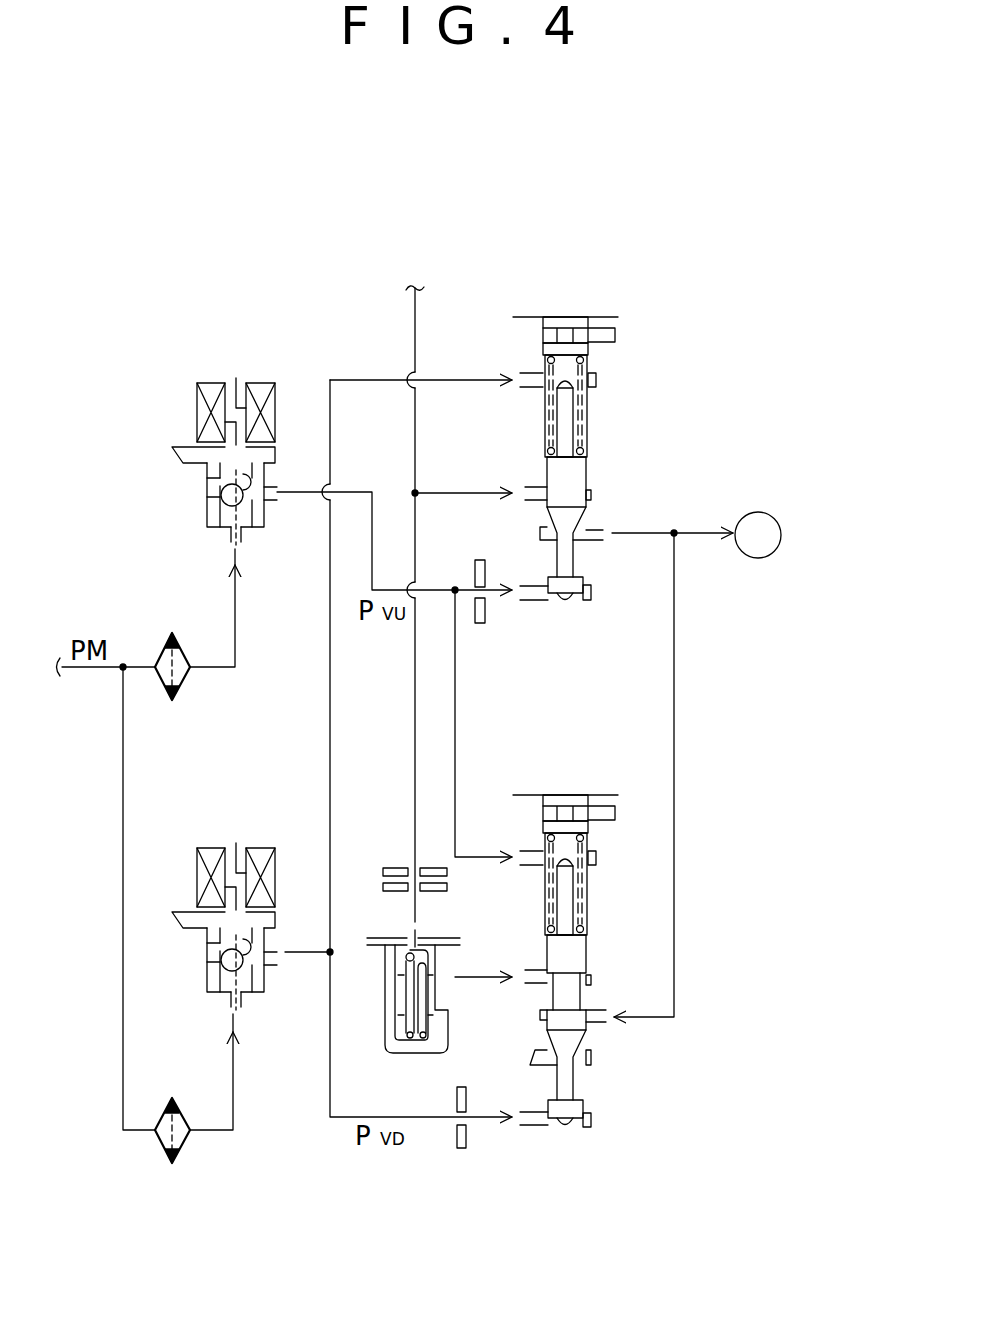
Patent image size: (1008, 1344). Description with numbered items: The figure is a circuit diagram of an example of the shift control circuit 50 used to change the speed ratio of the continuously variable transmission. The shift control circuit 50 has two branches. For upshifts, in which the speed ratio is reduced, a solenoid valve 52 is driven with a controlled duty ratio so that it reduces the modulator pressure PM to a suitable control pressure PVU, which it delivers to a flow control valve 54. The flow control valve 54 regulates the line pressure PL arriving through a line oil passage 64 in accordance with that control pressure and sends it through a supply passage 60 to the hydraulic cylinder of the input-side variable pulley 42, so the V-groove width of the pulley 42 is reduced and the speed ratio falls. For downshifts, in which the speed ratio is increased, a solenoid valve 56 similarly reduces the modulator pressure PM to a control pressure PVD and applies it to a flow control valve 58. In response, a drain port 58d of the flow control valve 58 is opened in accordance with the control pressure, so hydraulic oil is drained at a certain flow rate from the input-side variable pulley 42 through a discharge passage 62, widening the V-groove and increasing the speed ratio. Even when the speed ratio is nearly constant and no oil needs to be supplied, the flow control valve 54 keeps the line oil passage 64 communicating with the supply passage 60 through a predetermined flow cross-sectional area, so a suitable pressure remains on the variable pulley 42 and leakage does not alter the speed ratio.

The input-side variable pulley 42 is at (758, 525).
The shift control circuit 50 is at (642, 252).
The solenoid valve 52 is at (172, 352).
The flow control valve 54 is at (494, 325).
The solenoid valve 56 is at (268, 805).
The flow control valve 58 is at (603, 773).
The drain port 58d is at (532, 1056).
The supply passage 60 is at (632, 533).
The discharge passage 62 is at (674, 872).
The line oil passage 64 is at (420, 478).